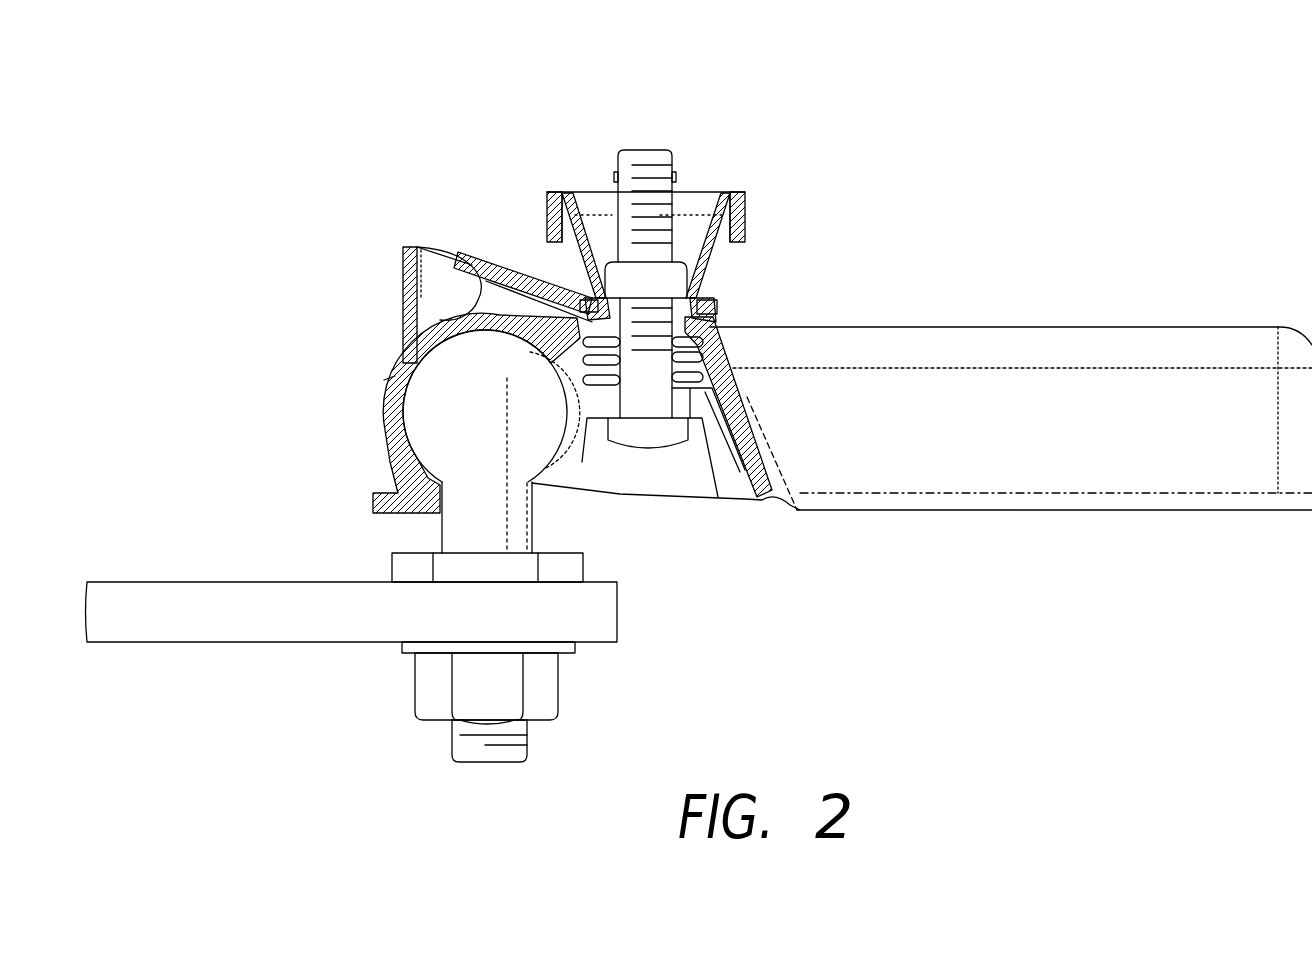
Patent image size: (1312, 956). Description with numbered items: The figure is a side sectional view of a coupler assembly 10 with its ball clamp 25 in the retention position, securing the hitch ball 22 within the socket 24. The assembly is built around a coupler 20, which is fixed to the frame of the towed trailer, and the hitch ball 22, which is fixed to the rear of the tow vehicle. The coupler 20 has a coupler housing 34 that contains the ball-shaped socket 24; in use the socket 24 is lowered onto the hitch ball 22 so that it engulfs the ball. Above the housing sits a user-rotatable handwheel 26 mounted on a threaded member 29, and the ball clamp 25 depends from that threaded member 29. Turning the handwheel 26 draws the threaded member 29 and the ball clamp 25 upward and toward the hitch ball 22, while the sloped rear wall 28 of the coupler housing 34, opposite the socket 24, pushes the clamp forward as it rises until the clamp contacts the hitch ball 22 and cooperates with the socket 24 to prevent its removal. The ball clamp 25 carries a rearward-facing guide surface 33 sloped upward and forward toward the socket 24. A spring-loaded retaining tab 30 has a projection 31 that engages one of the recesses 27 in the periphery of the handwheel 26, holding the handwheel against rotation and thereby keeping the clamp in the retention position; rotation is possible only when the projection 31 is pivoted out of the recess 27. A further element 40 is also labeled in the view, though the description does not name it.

The coupler assembly 10 is at (370, 182).
The coupler 20 is at (333, 368).
The hitch ball 22 is at (500, 427).
The socket 24 is at (393, 445).
The ball clamp 25 is at (603, 470).
The handwheel 26 is at (713, 187).
The recesses 27 is at (598, 290).
The rear wall 28 is at (750, 400).
The threaded member 29 is at (662, 430).
The retaining tab 30 is at (418, 317).
The projection 31 is at (557, 280).
The guide surface 33 is at (745, 497).
The coupler housing 34 is at (825, 327).
The seat 40 is at (397, 376).